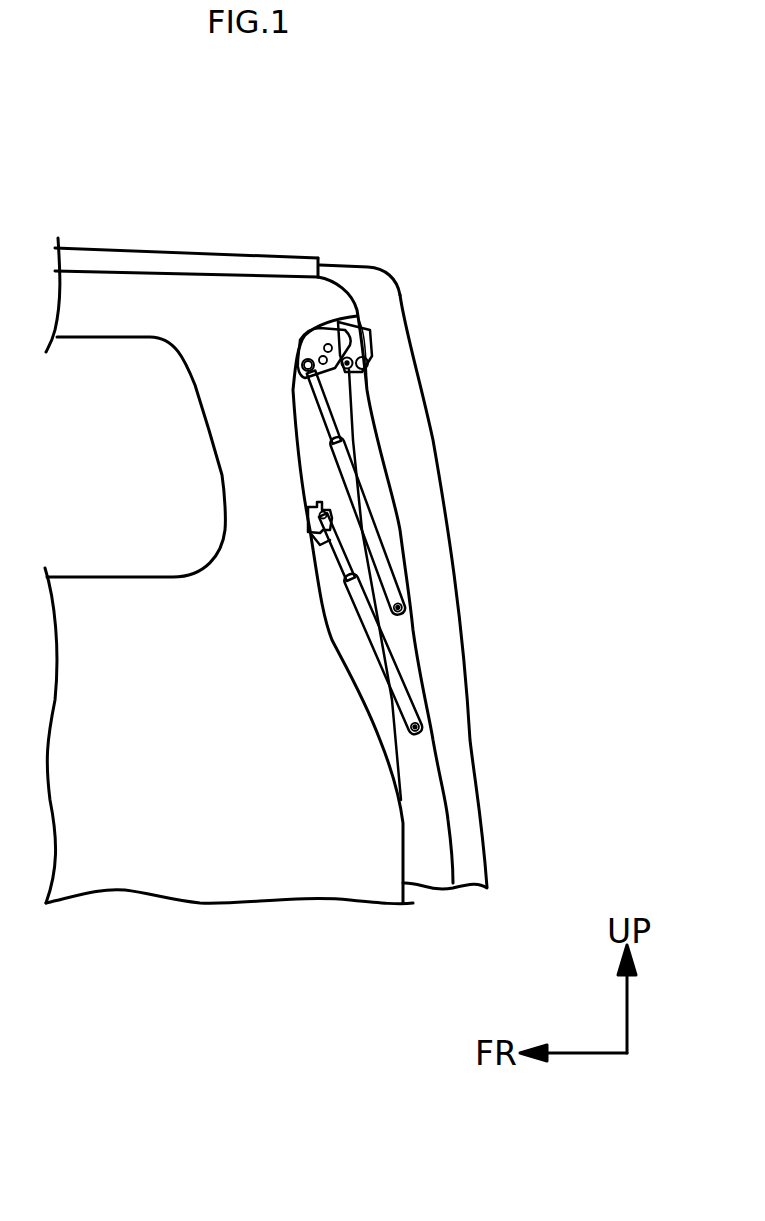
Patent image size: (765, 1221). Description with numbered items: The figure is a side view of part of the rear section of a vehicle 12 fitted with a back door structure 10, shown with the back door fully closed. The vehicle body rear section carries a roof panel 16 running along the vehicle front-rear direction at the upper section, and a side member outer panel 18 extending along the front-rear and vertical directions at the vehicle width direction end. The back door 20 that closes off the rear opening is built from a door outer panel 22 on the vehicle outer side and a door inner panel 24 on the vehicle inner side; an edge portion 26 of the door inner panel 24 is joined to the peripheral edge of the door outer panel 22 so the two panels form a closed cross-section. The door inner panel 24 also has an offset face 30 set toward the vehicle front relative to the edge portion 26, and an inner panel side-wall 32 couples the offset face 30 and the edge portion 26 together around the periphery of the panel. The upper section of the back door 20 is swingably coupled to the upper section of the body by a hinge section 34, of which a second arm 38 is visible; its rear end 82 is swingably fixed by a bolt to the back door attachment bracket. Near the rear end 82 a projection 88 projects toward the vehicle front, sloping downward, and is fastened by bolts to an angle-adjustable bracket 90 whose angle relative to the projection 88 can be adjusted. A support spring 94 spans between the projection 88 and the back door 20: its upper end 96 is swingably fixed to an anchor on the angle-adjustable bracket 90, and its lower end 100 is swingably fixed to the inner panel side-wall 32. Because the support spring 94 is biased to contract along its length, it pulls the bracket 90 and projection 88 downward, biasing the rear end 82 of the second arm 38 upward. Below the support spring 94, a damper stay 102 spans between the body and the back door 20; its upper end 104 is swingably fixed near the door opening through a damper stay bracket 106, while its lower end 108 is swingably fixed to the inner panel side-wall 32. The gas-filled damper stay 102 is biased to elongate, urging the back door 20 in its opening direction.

The back door structure 10 is at (375, 265).
The vehicle 12 is at (255, 203).
The roof panel 16 is at (118, 257).
The side member outer panel 18 is at (223, 403).
The back door 20 is at (443, 437).
The door outer panel 22 is at (447, 517).
The door inner panel 24 is at (445, 886).
The edge portion 26 is at (503, 807).
The offset face 30 is at (392, 702).
The inner panel side-wall 32 is at (503, 828).
The hinge section 34 is at (370, 340).
The second arm 38 is at (352, 332).
The rear end 82 is at (368, 354).
The projection 88 is at (308, 372).
The angle-adjustable bracket 90 is at (303, 357).
The support spring 94 is at (389, 493).
The upper end 96 is at (303, 385).
The lower end 100 is at (396, 598).
The damper stay 102 is at (343, 654).
The upper end 104 is at (282, 541).
The damper stay bracket 106 is at (310, 507).
The lower end 108 is at (405, 706).